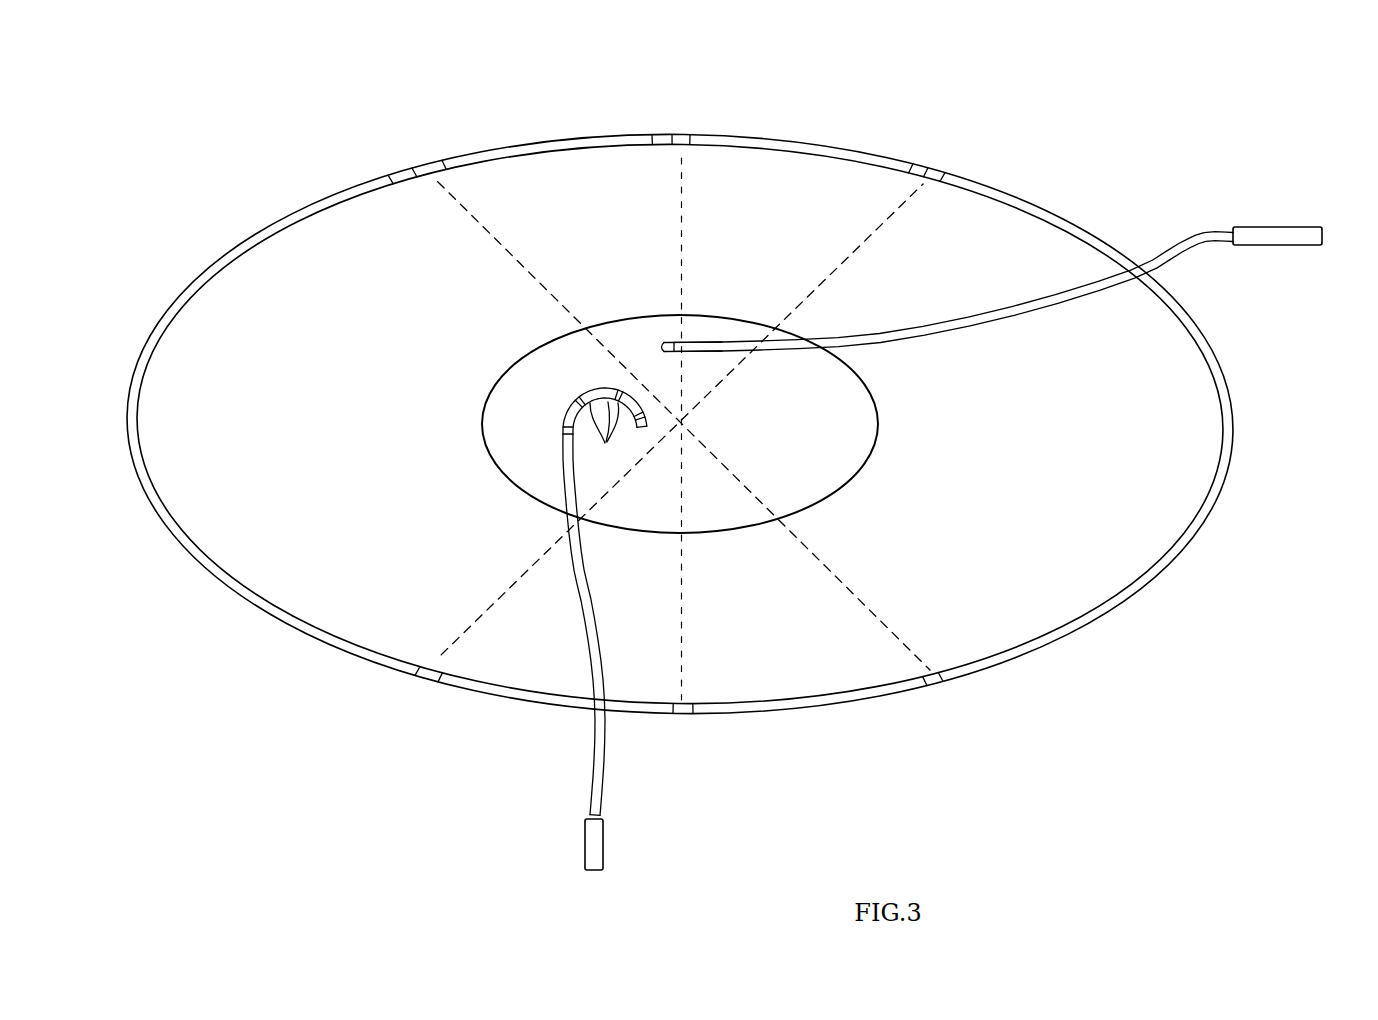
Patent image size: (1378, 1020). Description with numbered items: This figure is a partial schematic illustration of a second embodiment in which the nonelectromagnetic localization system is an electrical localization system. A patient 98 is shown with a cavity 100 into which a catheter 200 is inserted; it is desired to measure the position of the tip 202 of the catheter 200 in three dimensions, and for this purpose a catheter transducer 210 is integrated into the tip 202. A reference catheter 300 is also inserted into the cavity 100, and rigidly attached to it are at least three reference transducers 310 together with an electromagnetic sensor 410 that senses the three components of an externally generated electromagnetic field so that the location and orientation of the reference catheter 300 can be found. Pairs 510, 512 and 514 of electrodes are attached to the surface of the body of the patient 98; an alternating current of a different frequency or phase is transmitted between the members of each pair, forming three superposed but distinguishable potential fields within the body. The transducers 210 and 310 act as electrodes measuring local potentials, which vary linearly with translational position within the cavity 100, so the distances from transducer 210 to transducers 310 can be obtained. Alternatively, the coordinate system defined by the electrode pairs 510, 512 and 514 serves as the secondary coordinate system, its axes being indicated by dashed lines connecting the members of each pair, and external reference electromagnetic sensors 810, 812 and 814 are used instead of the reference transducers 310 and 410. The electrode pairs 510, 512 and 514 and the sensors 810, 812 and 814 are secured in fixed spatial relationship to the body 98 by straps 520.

The patient 98 is at (700, 416).
The cavity 100 is at (805, 471).
The catheter 200 is at (969, 252).
The tip 202 is at (659, 341).
The catheter transducer 210 is at (683, 342).
The reference catheter 300 is at (593, 628).
The reference transducers 310 is at (605, 438).
The electromagnetic sensor 410 is at (562, 428).
The pair of electrodes 510 is at (428, 165).
The pair of electrodes 512 is at (947, 175).
The pair of electrodes 514 is at (692, 136).
The straps 520 is at (236, 258).
The electromagnetic sensor 810 is at (398, 172).
The electromagnetic sensor 812 is at (661, 138).
The electromagnetic sensor 814 is at (923, 168).